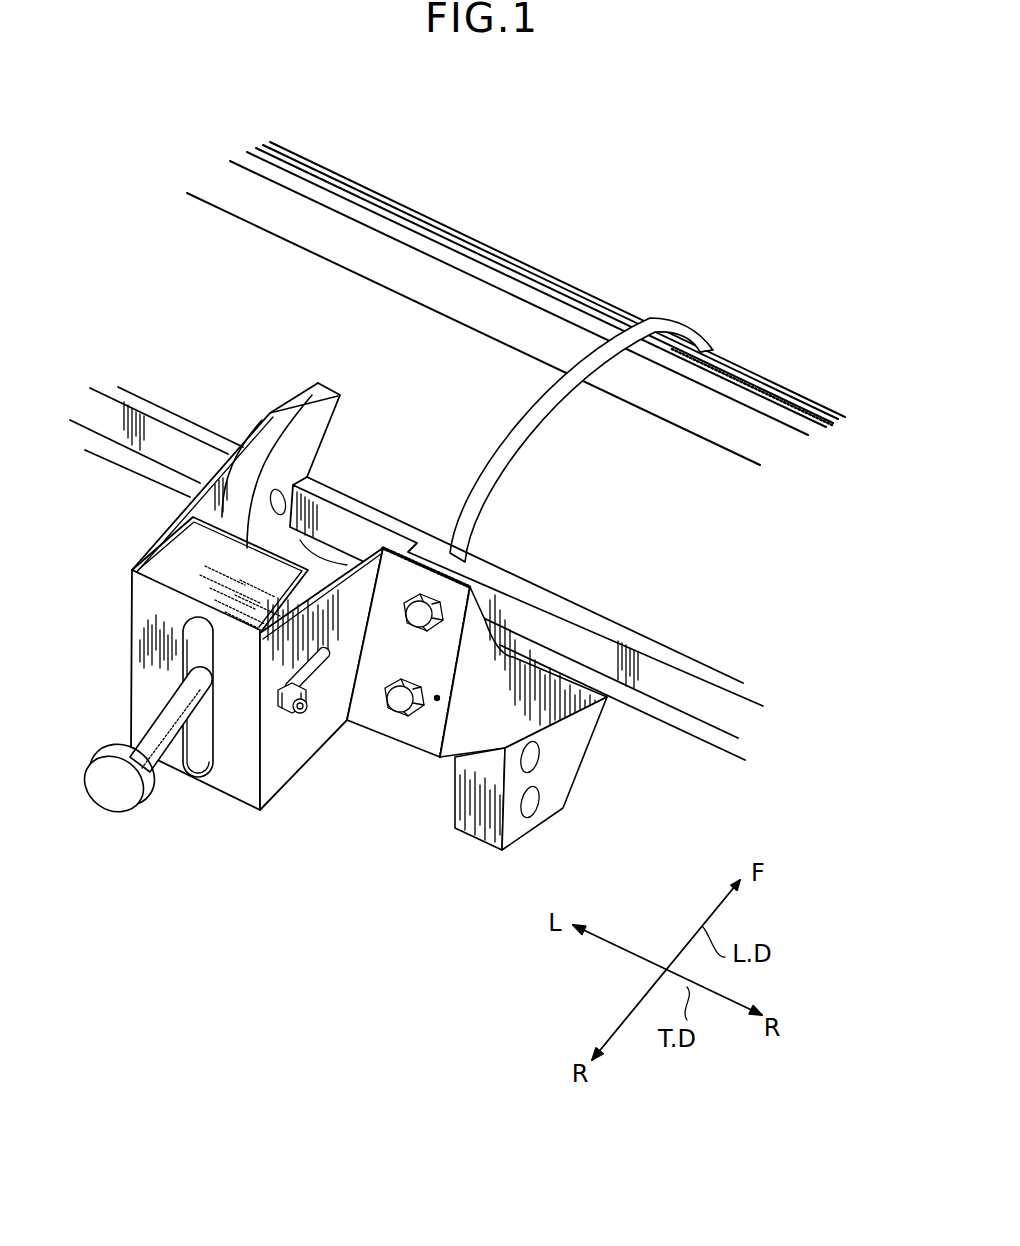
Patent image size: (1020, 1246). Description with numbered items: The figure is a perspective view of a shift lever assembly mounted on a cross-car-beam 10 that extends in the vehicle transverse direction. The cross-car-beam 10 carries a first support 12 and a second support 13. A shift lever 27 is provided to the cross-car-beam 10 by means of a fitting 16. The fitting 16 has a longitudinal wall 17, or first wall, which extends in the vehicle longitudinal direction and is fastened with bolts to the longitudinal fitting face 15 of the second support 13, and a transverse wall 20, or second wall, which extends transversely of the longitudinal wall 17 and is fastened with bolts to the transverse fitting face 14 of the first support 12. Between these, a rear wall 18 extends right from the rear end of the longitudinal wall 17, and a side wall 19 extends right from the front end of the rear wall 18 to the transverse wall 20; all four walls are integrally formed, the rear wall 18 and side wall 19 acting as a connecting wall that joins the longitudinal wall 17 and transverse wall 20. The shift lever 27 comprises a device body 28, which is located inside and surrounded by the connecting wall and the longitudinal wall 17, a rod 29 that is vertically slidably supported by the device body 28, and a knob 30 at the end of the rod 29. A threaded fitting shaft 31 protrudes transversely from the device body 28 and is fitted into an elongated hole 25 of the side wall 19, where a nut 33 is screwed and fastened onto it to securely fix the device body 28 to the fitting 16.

The cross-car-beam 10 is at (752, 367).
The first support 12 is at (433, 548).
The second support 13 is at (307, 408).
The transverse fitting face 14 is at (470, 577).
The longitudinal fitting face 15 is at (287, 453).
The fitting 16 is at (144, 539).
The longitudinal wall 17 is at (233, 468).
The rear wall 18 is at (233, 790).
The side wall 19 is at (307, 713).
The transverse wall 20 is at (420, 737).
The elongated hole 25 is at (327, 663).
The shift lever 27 is at (157, 800).
The device body 28 is at (197, 566).
The rod 29 is at (167, 715).
The knob 30 is at (130, 795).
The fitting shaft 31 is at (307, 737).
The nut 33 is at (285, 717).